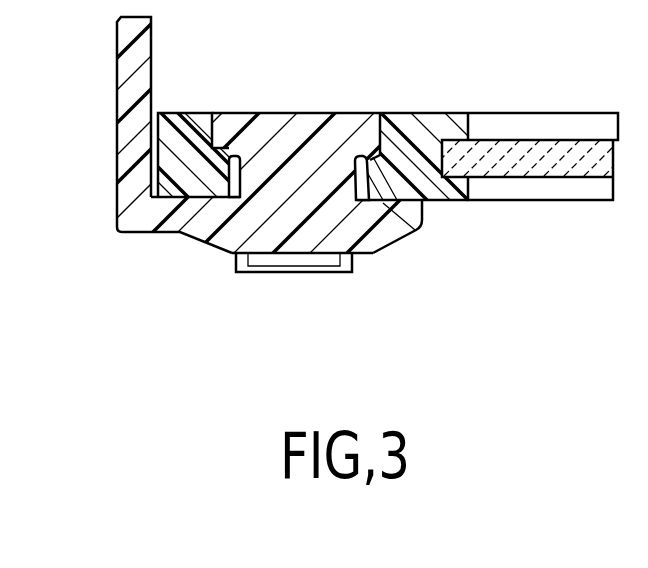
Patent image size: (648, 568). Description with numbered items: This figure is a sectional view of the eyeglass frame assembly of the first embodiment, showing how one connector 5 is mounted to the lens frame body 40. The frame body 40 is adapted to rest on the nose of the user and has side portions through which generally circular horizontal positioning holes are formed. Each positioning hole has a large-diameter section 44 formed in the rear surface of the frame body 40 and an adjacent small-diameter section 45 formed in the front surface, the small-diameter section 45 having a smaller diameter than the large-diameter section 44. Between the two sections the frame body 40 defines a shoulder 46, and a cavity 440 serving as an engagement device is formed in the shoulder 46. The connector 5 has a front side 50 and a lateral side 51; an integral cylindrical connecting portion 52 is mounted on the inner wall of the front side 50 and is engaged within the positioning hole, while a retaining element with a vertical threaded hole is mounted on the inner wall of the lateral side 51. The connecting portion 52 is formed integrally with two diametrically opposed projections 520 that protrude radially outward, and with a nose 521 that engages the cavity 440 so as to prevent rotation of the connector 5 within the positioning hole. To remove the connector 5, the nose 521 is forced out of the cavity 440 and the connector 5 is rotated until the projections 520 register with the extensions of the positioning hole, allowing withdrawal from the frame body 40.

The connector 5 is at (104, 109).
The lens frame body 40 is at (508, 113).
The large-diameter section 44 is at (224, 146).
The cavity 440 is at (226, 159).
The small-diameter section 45 is at (241, 170).
The shoulder 46 is at (362, 196).
The front side 50 is at (207, 212).
The lateral side 51 is at (135, 57).
The integral cylindrical connecting portion 52 is at (307, 193).
The projection 520 is at (227, 133).
The nose 521 is at (174, 237).